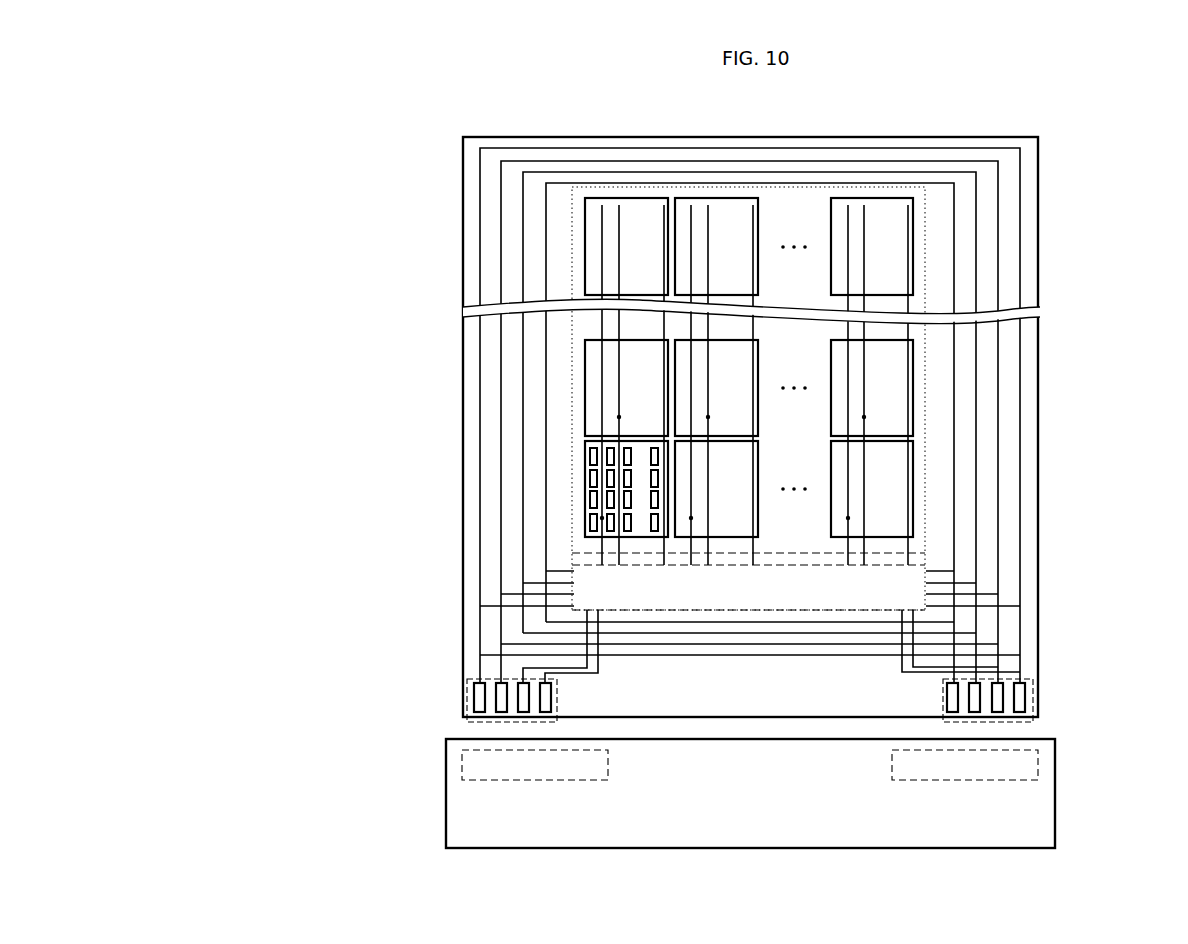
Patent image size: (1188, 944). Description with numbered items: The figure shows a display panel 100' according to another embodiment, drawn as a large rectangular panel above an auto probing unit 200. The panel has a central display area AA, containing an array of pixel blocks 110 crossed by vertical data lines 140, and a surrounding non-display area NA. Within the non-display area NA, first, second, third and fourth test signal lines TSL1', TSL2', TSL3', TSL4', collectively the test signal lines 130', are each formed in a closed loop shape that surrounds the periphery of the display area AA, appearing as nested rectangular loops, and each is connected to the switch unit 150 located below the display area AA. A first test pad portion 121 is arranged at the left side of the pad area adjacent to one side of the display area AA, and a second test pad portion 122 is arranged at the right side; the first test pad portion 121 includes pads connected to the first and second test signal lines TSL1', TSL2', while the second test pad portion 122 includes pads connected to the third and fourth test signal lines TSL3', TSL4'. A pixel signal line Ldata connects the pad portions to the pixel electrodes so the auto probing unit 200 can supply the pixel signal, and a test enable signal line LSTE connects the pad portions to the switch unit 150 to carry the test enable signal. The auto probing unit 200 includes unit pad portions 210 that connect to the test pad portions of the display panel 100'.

The display panel 100' is at (691, 427).
The pixel blocks / display units 110 is at (913, 247).
The first test pad portion 121 is at (467, 698).
The second test pad portion 122 is at (1030, 700).
The test signal lines 130' is at (753, 415).
The data lines 140 is at (848, 396).
The switch unit 150 is at (925, 566).
The auto probing unit 200 is at (770, 818).
The unit pad portion 210 is at (560, 775).
The display area AA is at (560, 323).
The non-display area NA is at (460, 352).
The first test signal line TSL1' is at (752, 415).
The second test signal line TSL2' is at (752, 422).
The third test signal line TSL3' is at (752, 427).
The fourth test signal line TSL4' is at (752, 433).
The pixel signal line Ldata is at (599, 666).
The test enable signal line LSTE is at (566, 668).